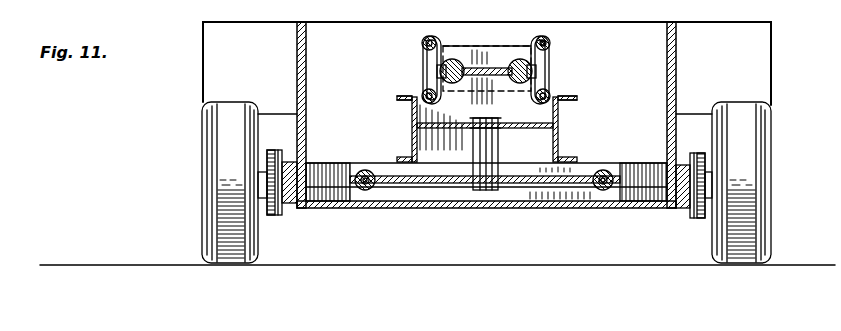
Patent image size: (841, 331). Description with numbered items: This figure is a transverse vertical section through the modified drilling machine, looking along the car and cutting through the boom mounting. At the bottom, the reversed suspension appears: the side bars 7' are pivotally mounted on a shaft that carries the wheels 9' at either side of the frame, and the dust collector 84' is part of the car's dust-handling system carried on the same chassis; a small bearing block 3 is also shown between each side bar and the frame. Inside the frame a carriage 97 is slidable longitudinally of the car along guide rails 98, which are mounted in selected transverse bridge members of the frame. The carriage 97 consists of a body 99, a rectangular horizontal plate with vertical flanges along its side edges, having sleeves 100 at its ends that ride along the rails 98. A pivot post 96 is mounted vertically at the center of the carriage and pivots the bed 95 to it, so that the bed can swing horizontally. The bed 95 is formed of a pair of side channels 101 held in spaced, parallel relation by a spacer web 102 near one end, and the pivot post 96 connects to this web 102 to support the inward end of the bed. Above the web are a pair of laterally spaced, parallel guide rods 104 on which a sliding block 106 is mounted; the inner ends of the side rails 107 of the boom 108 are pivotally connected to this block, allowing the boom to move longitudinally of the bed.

The dust collector 84' is at (509, 115).
The wheels 9' is at (489, 182).
The side bars 7' is at (485, 192).
The axle bearing block 3 is at (290, 160).
The body 99 is at (443, 188).
The carriage 97 is at (522, 186).
The guide rails 98 is at (364, 191).
The sleeves 100 is at (365, 170).
The pivot post 96 is at (490, 192).
The bed 95 is at (564, 110).
The side channels 101 is at (412, 100).
The spacer web 102 is at (530, 128).
The side rails 107 is at (422, 43).
The boom 108 is at (555, 50).
The sliding block 106 is at (494, 68).
The guide rods 104 is at (516, 84).